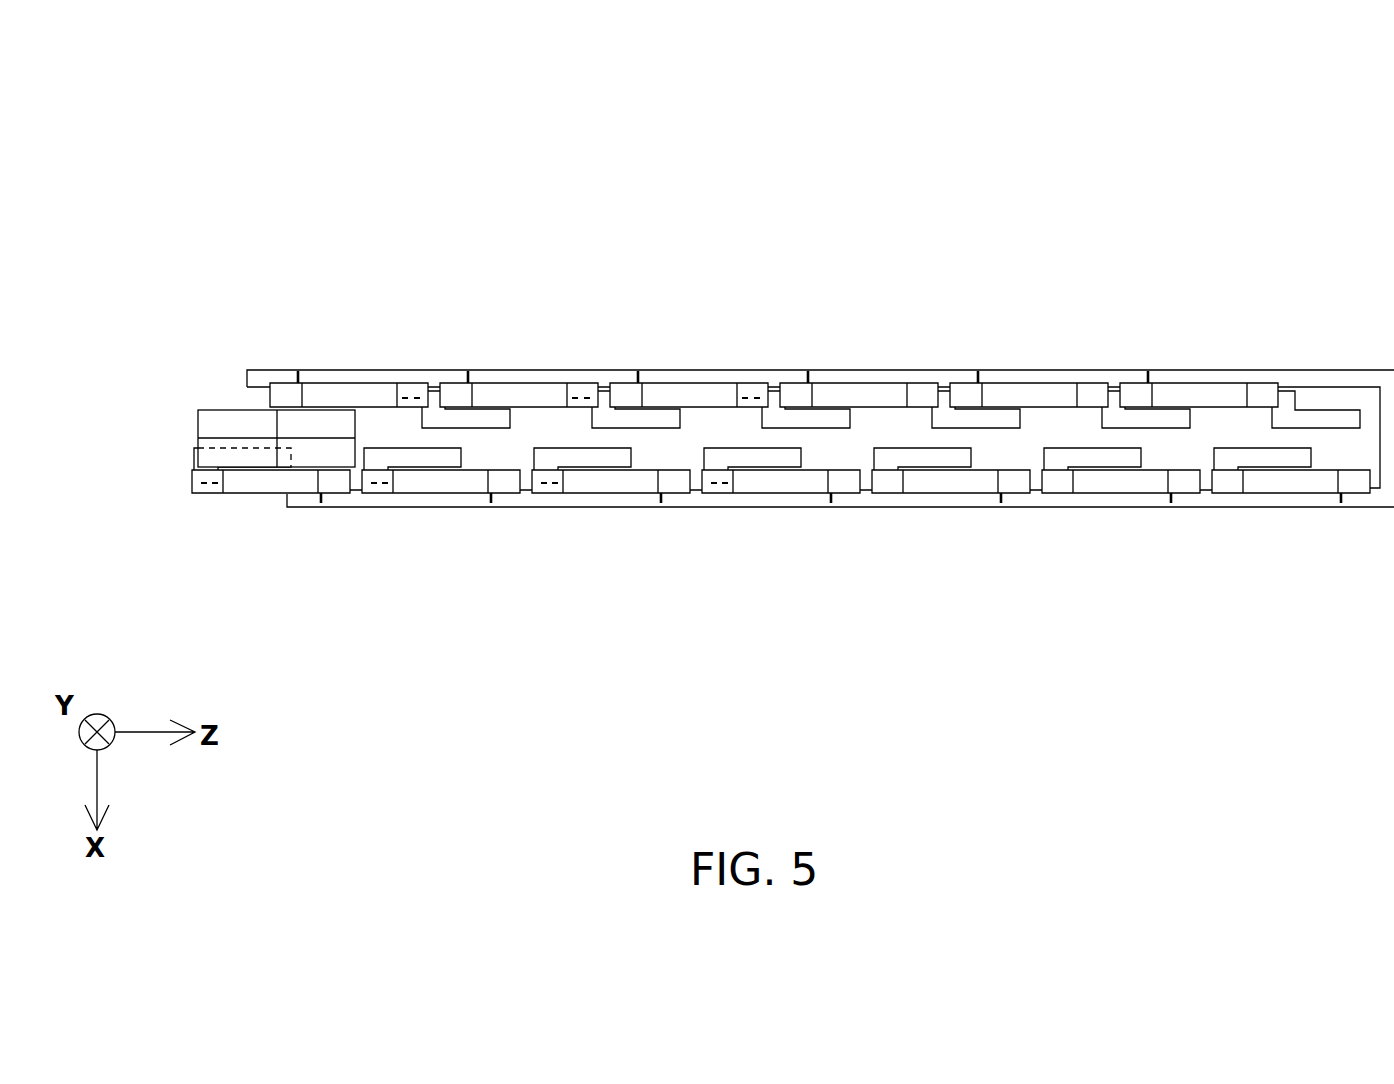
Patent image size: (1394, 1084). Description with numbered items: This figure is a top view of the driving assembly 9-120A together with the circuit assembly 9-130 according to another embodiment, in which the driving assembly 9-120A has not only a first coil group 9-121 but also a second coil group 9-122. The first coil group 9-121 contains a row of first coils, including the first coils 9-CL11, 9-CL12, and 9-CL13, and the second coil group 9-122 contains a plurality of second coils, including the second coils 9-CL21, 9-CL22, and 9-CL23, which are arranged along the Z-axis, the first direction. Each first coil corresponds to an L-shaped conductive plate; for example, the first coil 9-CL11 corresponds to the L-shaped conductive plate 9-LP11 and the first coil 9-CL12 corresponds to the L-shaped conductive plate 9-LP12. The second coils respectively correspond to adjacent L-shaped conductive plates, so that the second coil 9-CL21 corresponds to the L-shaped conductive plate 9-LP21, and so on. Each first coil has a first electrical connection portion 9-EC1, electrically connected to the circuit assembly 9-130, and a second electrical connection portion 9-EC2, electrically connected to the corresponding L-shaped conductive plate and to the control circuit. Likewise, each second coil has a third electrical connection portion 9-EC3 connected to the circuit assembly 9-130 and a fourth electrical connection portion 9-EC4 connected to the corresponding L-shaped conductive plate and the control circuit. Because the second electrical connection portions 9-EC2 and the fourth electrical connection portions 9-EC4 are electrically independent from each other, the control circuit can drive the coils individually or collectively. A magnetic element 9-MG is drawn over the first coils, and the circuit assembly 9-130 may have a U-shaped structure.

The driving assembly 9-120A is at (201, 400).
The magnetic element 9-MG is at (219, 396).
The circuit assembly 9-130 is at (1341, 356).
The first coil group 9-121 is at (940, 248).
The second coil group 9-122 is at (1170, 248).
The first coil 9-CL11 is at (258, 484).
The first coil 9-CL12 is at (462, 484).
The first coil 9-CL13 is at (632, 484).
The second coil 9-CL21 is at (347, 397).
The second coil 9-CL22 is at (537, 397).
The second coil 9-CL23 is at (694, 397).
The L-shaped conductive plate 9-LP11 is at (197, 450).
The L-shaped conductive plate 9-LP12 is at (432, 456).
The L-shaped conductive plate 9-LP21 is at (438, 420).
The first electrical connection portion 9-EC1 is at (318, 498).
The second electrical connection portion 9-EC2 is at (203, 487).
The third electrical connection portion 9-EC3 is at (297, 378).
The fourth electrical connection portion 9-EC4 is at (411, 396).